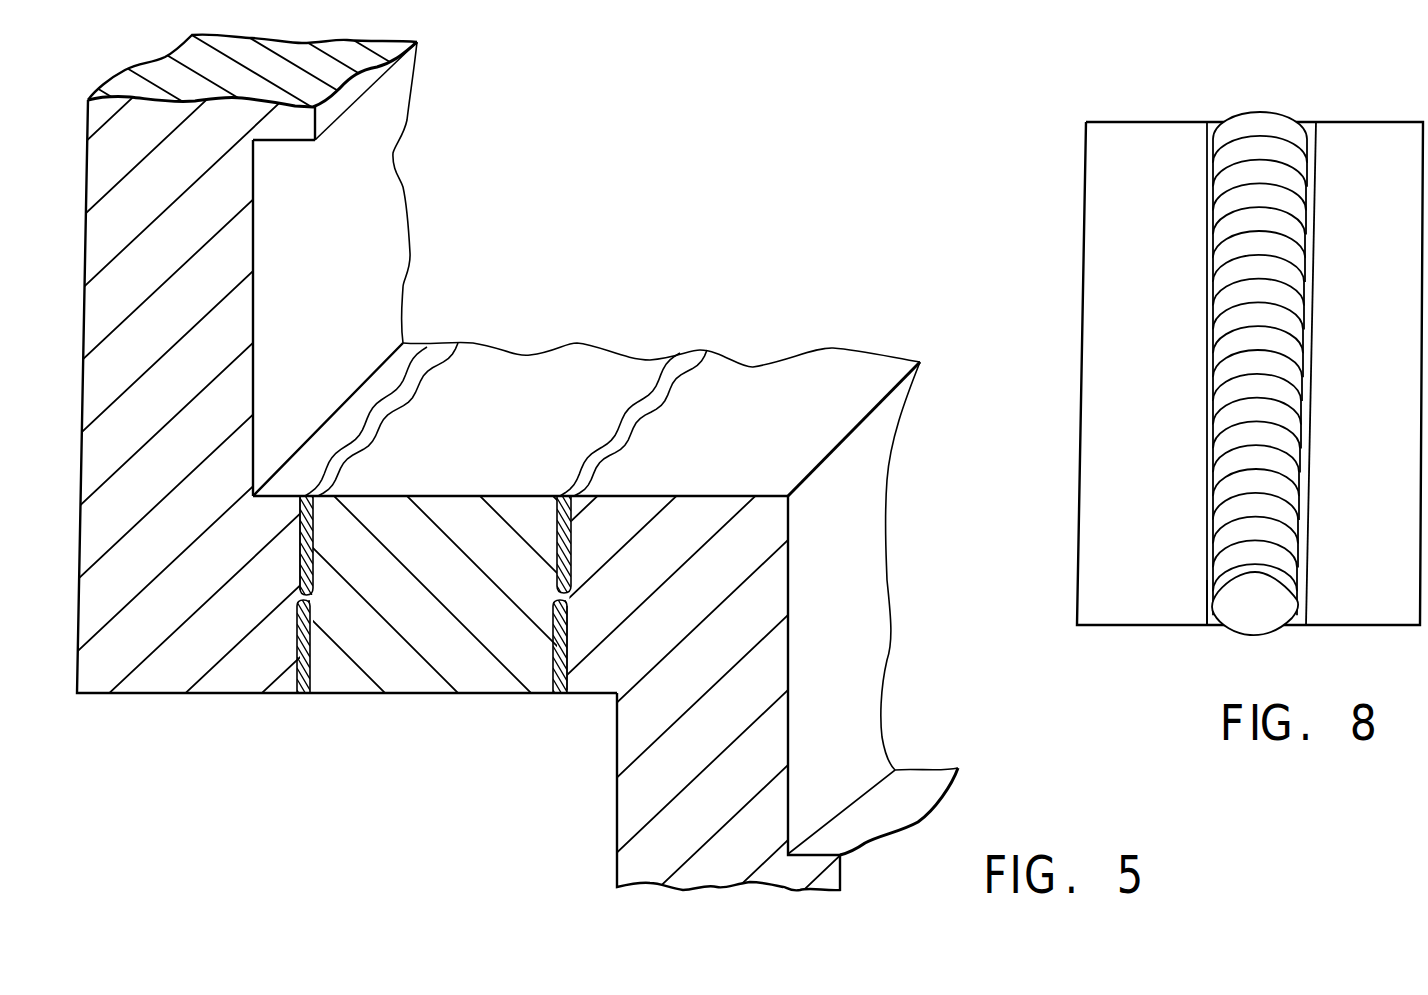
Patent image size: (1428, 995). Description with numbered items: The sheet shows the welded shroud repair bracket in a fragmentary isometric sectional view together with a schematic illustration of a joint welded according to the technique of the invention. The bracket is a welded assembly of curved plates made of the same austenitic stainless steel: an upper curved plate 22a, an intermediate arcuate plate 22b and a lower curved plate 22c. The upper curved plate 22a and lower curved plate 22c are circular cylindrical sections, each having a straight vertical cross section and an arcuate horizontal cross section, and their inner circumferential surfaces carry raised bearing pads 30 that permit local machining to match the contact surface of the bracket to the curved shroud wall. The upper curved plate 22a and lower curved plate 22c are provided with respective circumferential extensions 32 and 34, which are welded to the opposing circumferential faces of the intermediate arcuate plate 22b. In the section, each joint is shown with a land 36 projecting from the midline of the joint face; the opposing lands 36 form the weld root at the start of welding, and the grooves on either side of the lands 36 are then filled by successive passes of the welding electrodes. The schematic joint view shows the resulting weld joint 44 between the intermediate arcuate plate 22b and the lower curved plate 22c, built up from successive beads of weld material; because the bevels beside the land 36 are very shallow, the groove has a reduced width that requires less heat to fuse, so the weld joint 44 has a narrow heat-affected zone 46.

In FIG. 5, the upper curved plate 22a is at (382, 213).
In FIG. 5, the intermediate arcuate plate 22b is at (565, 367).
In FIG. 8, the intermediate arcuate plate 22b is at (1351, 396).
In FIG. 5, the lower curved plate 22c is at (853, 658).
In FIG. 8, the lower curved plate 22c is at (1118, 404).
In FIG. 5, the raised bearing pad 30 is at (360, 107).
In FIG. 5, the circumferential extension 32 is at (270, 513).
In FIG. 5, the circumferential extension 34 is at (607, 670).
In FIG. 5, the land 36 is at (567, 593).
In FIG. 8, the weld joint 44 is at (1238, 106).
In FIG. 8, the heat-affected zone 46 is at (1205, 595).